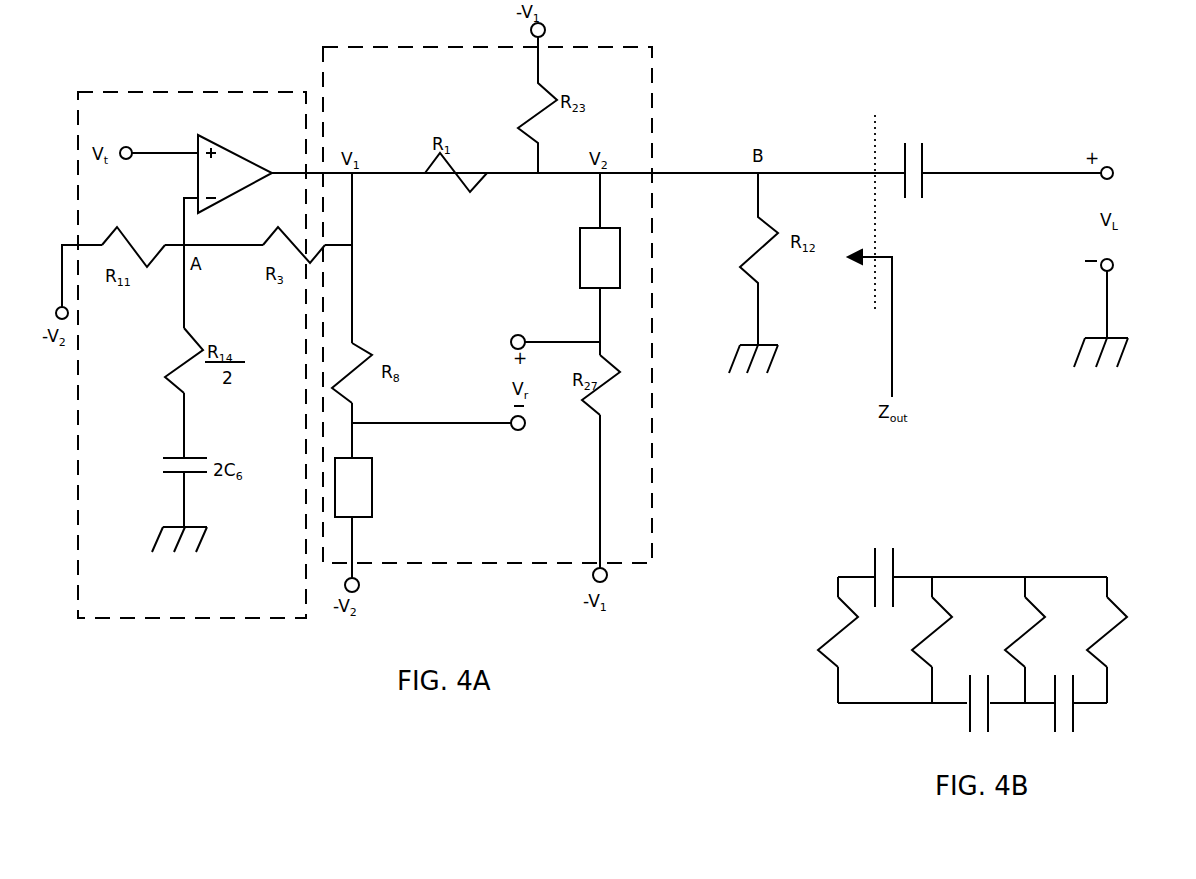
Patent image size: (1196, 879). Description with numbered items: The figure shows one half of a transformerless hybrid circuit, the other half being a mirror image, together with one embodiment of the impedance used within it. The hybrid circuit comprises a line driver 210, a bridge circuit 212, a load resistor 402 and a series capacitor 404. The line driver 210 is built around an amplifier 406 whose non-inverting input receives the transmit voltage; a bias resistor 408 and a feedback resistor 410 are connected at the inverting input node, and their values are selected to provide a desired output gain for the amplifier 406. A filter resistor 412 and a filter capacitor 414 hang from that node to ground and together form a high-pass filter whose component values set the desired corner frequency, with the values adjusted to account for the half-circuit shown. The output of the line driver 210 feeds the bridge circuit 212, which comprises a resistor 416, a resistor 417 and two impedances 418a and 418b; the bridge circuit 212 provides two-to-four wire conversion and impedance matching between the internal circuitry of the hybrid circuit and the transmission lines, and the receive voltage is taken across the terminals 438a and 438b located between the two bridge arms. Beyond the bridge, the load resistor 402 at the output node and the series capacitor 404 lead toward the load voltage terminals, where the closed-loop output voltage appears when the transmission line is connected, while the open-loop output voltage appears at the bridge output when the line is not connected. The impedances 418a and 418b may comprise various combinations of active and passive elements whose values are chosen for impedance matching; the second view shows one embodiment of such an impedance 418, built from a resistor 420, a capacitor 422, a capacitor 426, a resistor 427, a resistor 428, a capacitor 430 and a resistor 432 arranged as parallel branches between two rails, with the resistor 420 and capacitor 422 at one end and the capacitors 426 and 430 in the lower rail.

In FIG. 4A, the line driver 210 is at (100, 92).
In FIG. 4A, the bridge circuit 212 is at (652, 55).
In FIG. 4A, the load resistor 402 is at (745, 262).
In FIG. 4A, the series capacitor 404 is at (922, 150).
In FIG. 4A, the amplifier 406 is at (220, 147).
In FIG. 4A, the bias resistor 408 is at (117, 228).
In FIG. 4A, the feedback resistor 410 is at (278, 228).
In FIG. 4A, the filter resistor 412 is at (190, 338).
In FIG. 4A, the filter capacitor 414 is at (175, 457).
In FIG. 4A, the resistor 416 is at (372, 355).
In FIG. 4A, the resistor 417 is at (620, 372).
In FIG. 4B, the impedance 418 is at (963, 614).
In FIG. 4A, the impedance 418a is at (372, 468).
In FIG. 4A, the impedance 418b is at (580, 235).
In FIG. 4B, the resistor 420 is at (826, 652).
In FIG. 4B, the capacitor 422 is at (875, 556).
In FIG. 4B, the capacitor 426 is at (968, 720).
In FIG. 4B, the resistor R5 427 is at (945, 615).
In FIG. 4B, the resistor 428 is at (1033, 607).
In FIG. 4B, the capacitor 430 is at (1075, 720).
In FIG. 4B, the resistor 432 is at (1118, 607).
In FIG. 4A, the reference voltage positive terminal 438a is at (511, 342).
In FIG. 4A, the reference voltage negative terminal 438b is at (518, 430).